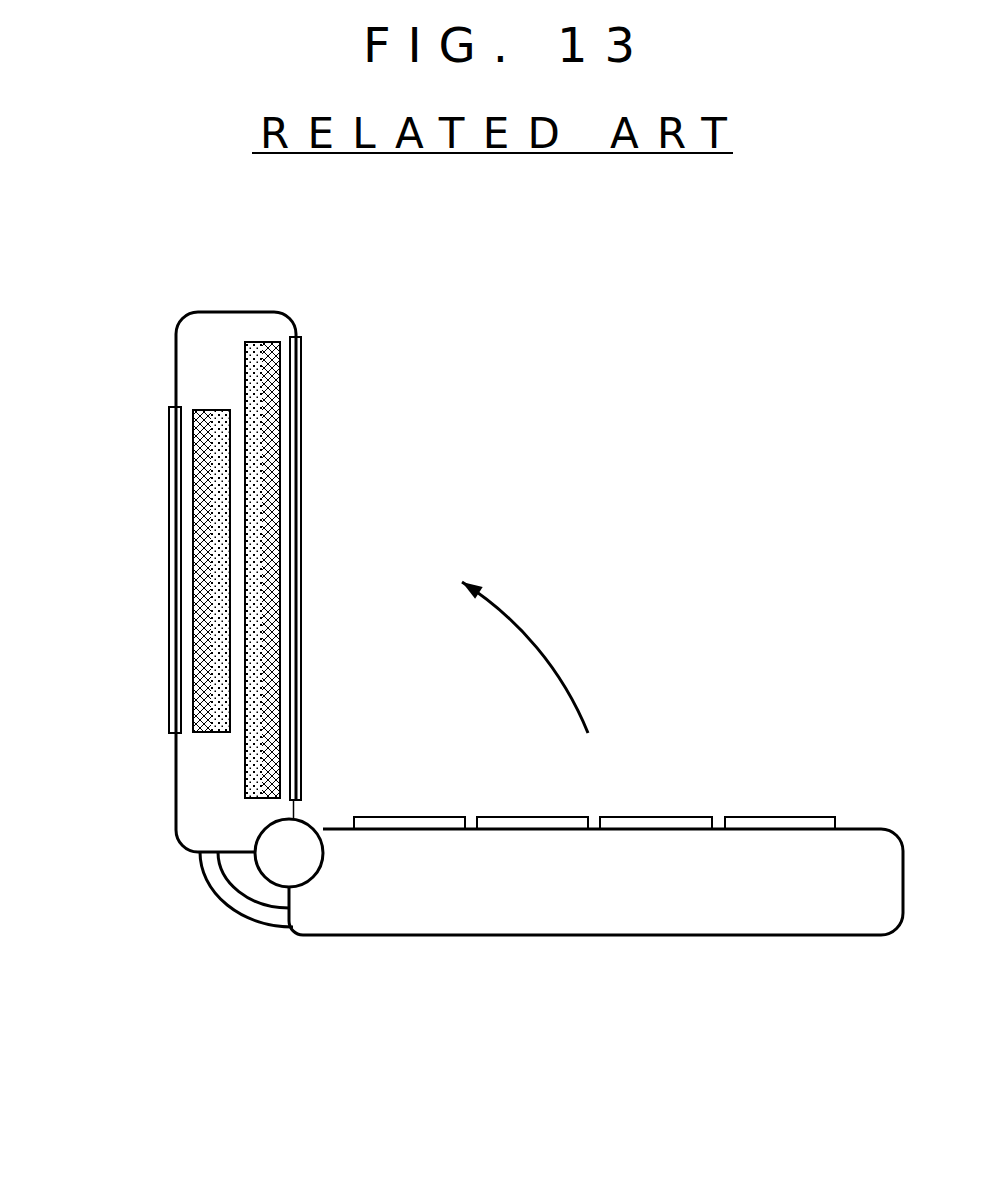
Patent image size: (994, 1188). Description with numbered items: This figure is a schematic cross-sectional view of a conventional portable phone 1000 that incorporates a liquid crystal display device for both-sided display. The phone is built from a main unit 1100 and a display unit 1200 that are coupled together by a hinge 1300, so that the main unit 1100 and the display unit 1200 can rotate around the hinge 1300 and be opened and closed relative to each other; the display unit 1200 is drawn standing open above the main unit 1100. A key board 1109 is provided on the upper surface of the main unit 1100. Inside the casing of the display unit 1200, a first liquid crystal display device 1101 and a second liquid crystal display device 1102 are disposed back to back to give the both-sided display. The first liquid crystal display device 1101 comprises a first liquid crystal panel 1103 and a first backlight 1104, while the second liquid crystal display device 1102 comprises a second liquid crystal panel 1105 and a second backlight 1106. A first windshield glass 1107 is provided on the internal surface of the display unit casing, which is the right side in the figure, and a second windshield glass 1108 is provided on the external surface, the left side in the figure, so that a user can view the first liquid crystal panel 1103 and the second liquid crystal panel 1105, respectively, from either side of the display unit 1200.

The portable phone 1000 is at (630, 518).
The main unit 1100 is at (592, 935).
The first liquid crystal display device 1101 is at (245, 336).
The second liquid crystal display device 1102 is at (230, 406).
The first liquid crystal panel 1103 is at (277, 515).
The first backlight 1104 is at (277, 443).
The second liquid crystal panel 1105 is at (196, 585).
The second backlight 1106 is at (210, 650).
The first windshield glass 1107 is at (296, 597).
The second windshield glass 1108 is at (177, 518).
The key board 1109 is at (652, 815).
The display unit 1200 is at (176, 353).
The hinge 1300 is at (297, 840).